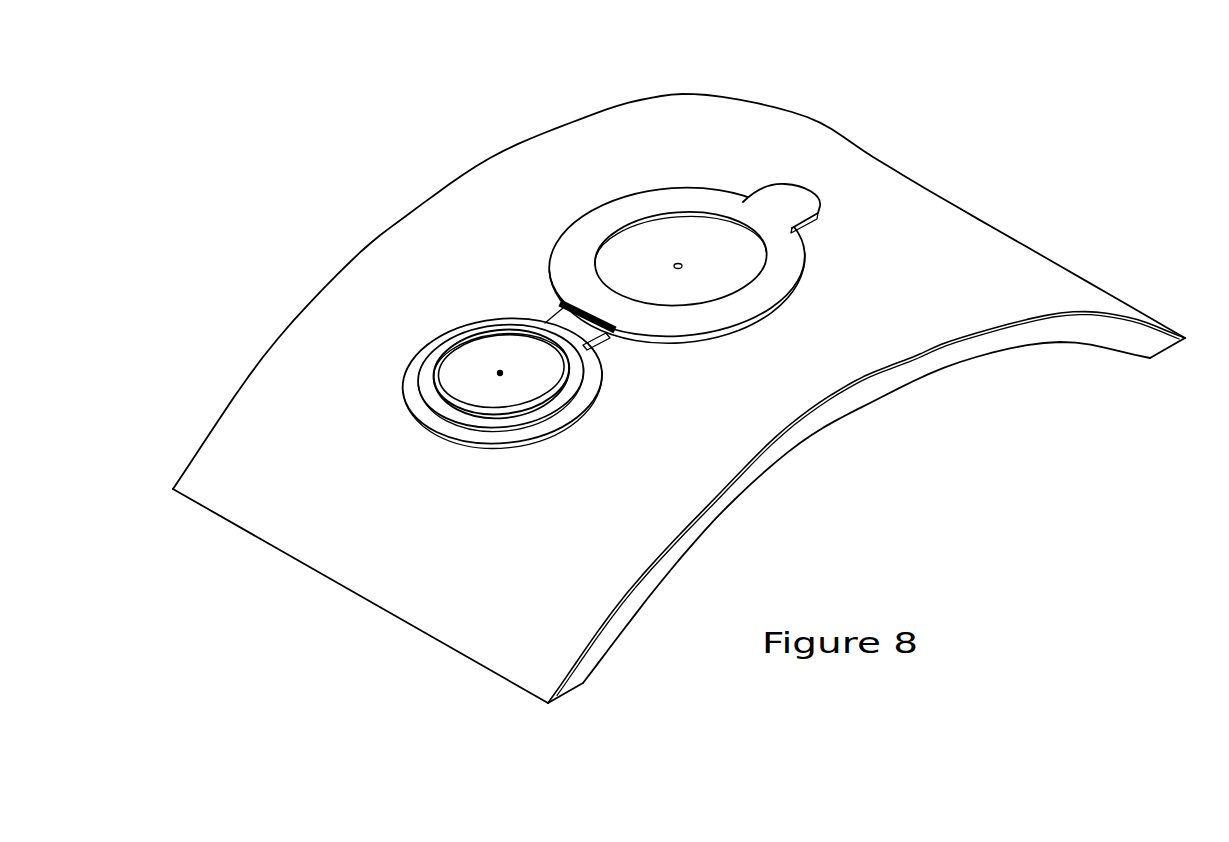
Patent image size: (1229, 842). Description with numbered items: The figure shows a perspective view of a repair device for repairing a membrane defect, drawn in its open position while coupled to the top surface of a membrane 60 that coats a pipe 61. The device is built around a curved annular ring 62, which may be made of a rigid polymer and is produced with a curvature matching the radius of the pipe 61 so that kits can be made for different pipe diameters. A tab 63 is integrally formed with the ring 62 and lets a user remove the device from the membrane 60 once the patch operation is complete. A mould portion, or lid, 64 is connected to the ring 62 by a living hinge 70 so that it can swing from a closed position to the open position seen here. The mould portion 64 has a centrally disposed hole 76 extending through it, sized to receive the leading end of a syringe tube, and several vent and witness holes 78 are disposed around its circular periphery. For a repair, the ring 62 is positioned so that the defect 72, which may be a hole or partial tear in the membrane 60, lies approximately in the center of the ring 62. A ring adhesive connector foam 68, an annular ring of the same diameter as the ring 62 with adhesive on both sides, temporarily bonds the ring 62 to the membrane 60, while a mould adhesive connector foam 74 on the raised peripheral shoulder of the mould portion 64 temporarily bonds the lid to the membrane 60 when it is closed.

The membrane 60 is at (1080, 315).
The pipe 61 is at (992, 342).
The ring 62 is at (598, 200).
The tab 63 is at (792, 195).
The mould portion 64 is at (483, 382).
The ring adhesive connector foam 68 is at (730, 333).
The living hinge 70 is at (630, 332).
The defect 72 is at (677, 262).
The mould adhesive connector foam 74 is at (562, 390).
The centrally disposed hole 76 is at (499, 372).
The vent and witness holes 78 is at (517, 323).